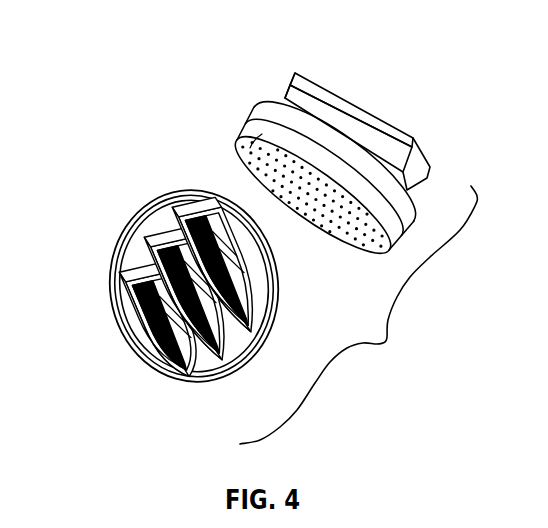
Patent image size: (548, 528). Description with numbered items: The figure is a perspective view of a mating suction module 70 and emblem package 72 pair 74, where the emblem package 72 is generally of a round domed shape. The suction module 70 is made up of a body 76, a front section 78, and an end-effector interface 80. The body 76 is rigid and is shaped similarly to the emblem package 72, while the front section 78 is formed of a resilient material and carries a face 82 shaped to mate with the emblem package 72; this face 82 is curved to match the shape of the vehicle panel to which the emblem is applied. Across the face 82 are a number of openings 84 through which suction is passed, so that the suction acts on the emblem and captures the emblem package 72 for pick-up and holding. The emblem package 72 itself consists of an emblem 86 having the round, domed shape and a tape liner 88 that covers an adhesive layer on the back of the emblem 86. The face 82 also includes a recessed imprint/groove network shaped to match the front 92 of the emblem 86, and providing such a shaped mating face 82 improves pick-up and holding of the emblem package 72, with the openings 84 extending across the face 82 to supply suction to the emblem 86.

The suction module 70 is at (255, 103).
The emblem package 72 is at (118, 235).
The pair 74 is at (385, 342).
The body 76 is at (325, 132).
The front section 78 is at (254, 127).
The end-effector interface 80 is at (382, 128).
The face 82 is at (341, 221).
The openings 84 is at (276, 147).
The emblem 86 is at (116, 358).
The tape liner 88 is at (197, 190).
The front 92 is at (229, 321).